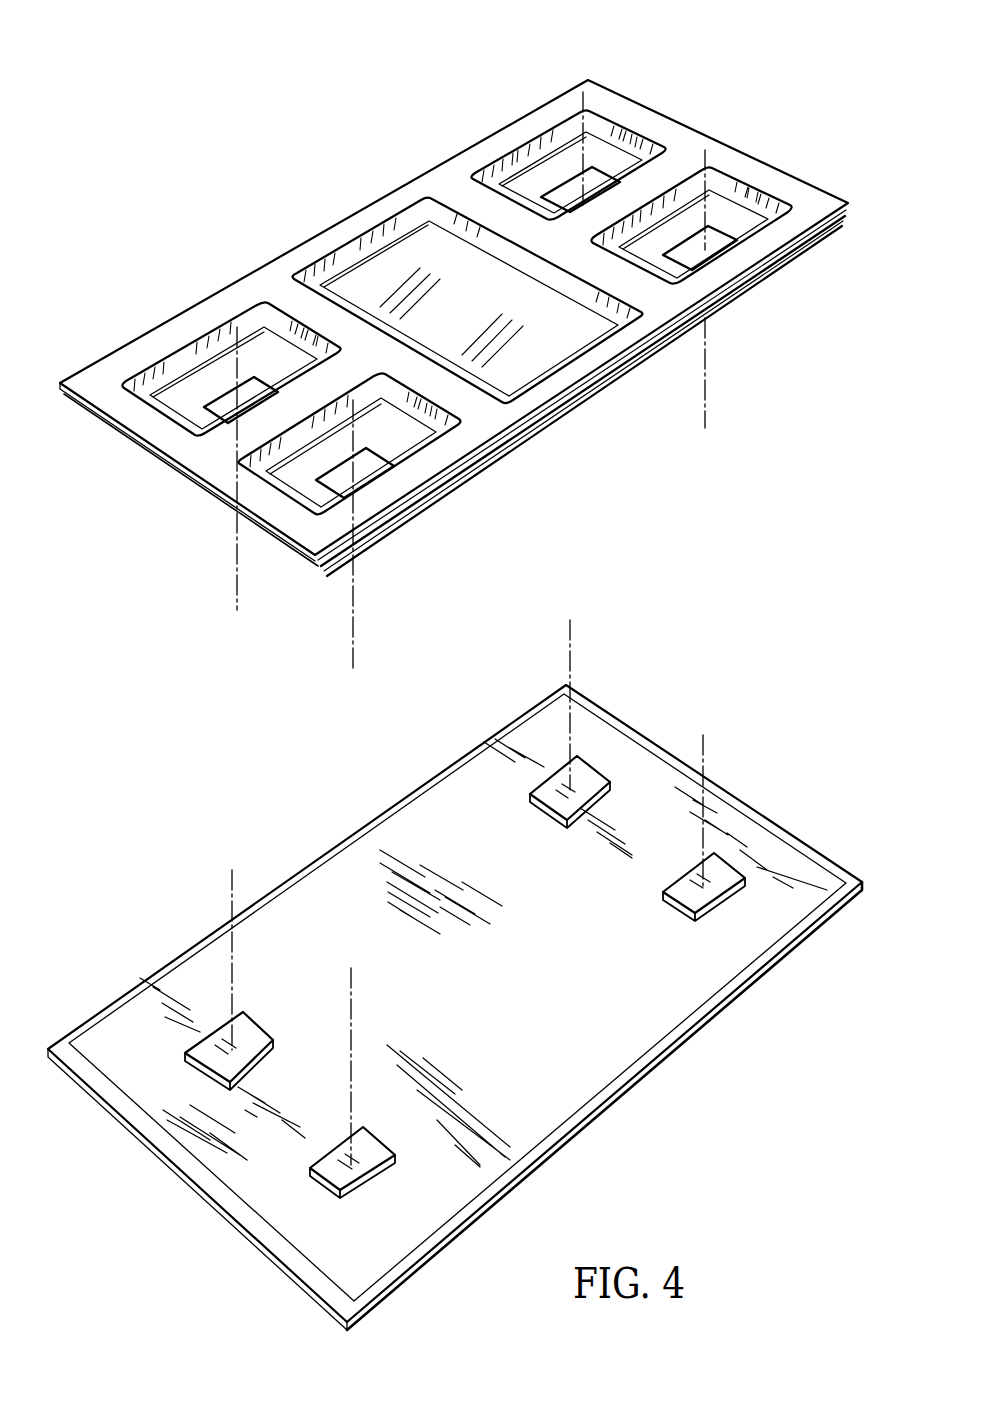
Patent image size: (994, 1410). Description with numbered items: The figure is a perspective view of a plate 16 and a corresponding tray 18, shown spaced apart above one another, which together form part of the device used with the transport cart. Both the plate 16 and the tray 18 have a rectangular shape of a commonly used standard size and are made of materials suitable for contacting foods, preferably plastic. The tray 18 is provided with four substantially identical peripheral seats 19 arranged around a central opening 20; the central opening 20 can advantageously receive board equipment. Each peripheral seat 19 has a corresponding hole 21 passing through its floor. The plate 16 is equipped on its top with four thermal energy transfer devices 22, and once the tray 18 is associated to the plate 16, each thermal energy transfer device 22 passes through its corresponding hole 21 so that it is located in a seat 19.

The plate 16 is at (455, 962).
The tray 18 is at (454, 338).
The peripheral seats 19 is at (630, 160).
The central opening 20 is at (365, 278).
The hole 21 is at (565, 178).
The thermal energy transfer devices 22 is at (548, 795).